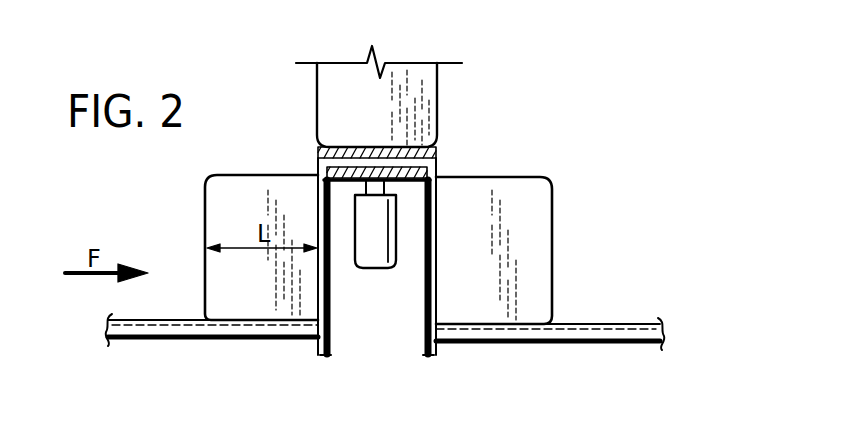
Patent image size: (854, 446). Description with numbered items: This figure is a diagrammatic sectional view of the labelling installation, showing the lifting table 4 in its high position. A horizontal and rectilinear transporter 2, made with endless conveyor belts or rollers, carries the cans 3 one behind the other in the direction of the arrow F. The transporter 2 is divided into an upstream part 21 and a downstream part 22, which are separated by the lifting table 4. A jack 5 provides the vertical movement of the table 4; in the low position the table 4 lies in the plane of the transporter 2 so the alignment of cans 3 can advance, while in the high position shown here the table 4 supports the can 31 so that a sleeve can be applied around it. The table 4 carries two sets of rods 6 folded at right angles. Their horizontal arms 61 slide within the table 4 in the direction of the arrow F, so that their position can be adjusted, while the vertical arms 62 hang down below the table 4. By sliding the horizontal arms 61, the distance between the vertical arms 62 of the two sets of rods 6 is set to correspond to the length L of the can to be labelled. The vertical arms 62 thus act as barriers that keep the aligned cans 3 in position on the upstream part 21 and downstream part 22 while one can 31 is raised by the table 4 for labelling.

The transporter 2 is at (212, 341).
The upstream part 21 is at (138, 336).
The downstream part 22 is at (627, 342).
The cans 3 is at (210, 212).
The can 31 is at (425, 90).
The lifting table 4 is at (437, 154).
The jack 5 is at (374, 268).
The sets of rods 6 is at (323, 293).
The horizontal arms 61 is at (421, 177).
The vertical arms 62 is at (333, 325).